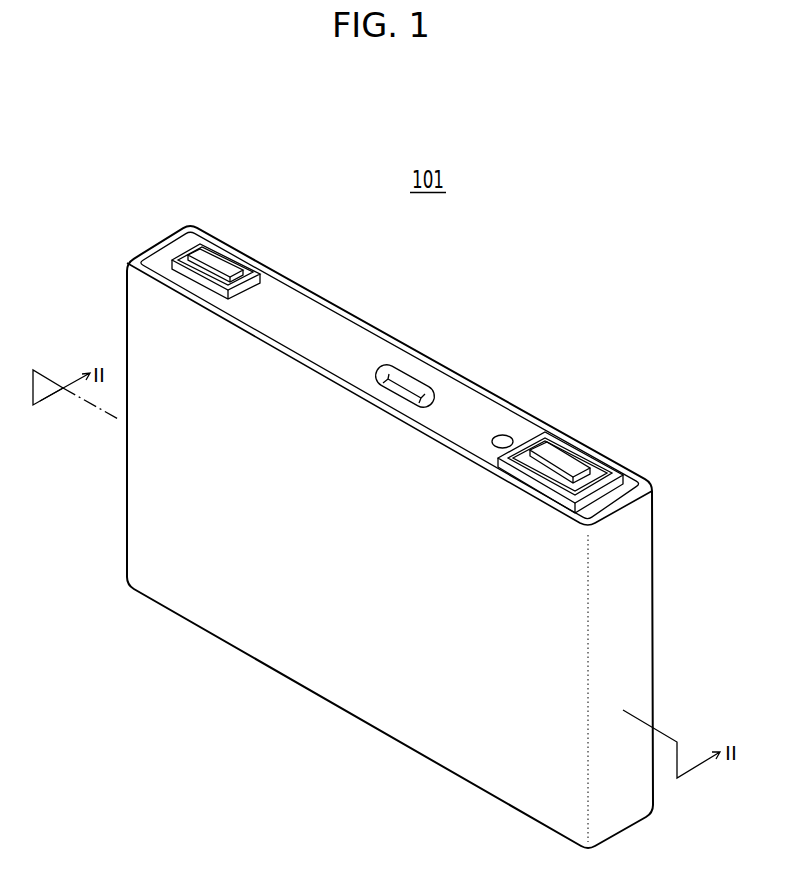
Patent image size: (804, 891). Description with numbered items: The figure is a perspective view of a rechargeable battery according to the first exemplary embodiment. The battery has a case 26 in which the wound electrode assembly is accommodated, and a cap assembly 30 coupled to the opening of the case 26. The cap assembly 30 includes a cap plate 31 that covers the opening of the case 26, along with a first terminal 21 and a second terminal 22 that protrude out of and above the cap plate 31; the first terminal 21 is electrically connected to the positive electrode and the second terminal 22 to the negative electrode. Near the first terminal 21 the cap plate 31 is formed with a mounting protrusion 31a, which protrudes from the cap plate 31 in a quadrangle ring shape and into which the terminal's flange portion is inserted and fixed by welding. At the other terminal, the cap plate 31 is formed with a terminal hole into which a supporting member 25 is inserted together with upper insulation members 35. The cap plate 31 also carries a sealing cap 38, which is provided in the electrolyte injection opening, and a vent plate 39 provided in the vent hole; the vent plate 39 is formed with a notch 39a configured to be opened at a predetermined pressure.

The first terminal 21 is at (209, 254).
The second terminal 22 is at (548, 450).
The supporting member 25 is at (598, 468).
The case 26 is at (340, 680).
The cap assembly 30 is at (483, 395).
The cap plate 31 is at (367, 348).
The mounting protrusion 31a is at (256, 270).
The upper insulation member 35 is at (618, 477).
The sealing cap 38 is at (502, 436).
The vent plate 39 is at (405, 370).
The notch 39a is at (418, 390).